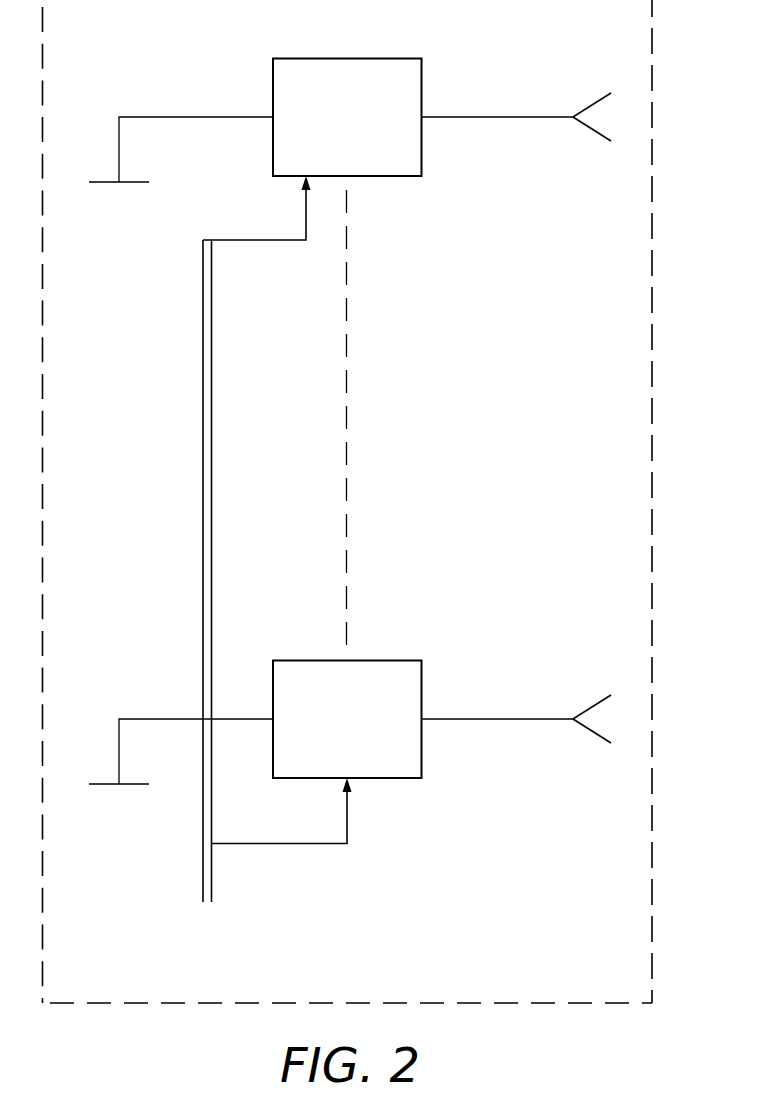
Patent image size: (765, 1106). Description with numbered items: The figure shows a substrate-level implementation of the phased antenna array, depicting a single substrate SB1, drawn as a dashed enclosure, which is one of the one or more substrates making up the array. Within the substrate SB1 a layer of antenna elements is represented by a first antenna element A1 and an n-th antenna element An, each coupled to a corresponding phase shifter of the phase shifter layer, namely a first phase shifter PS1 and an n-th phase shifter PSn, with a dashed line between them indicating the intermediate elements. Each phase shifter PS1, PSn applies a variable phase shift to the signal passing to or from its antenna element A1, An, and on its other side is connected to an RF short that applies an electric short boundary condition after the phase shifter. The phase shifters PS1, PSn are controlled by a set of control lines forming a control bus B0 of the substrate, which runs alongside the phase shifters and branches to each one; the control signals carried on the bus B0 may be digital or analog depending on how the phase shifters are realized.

The substrate SB1 is at (348, 501).
The phase shifter PSn is at (347, 98).
The phase shifter PS1 is at (352, 700).
The antenna element An is at (517, 102).
The antenna element A1 is at (517, 704).
The control bus B0 is at (272, 558).